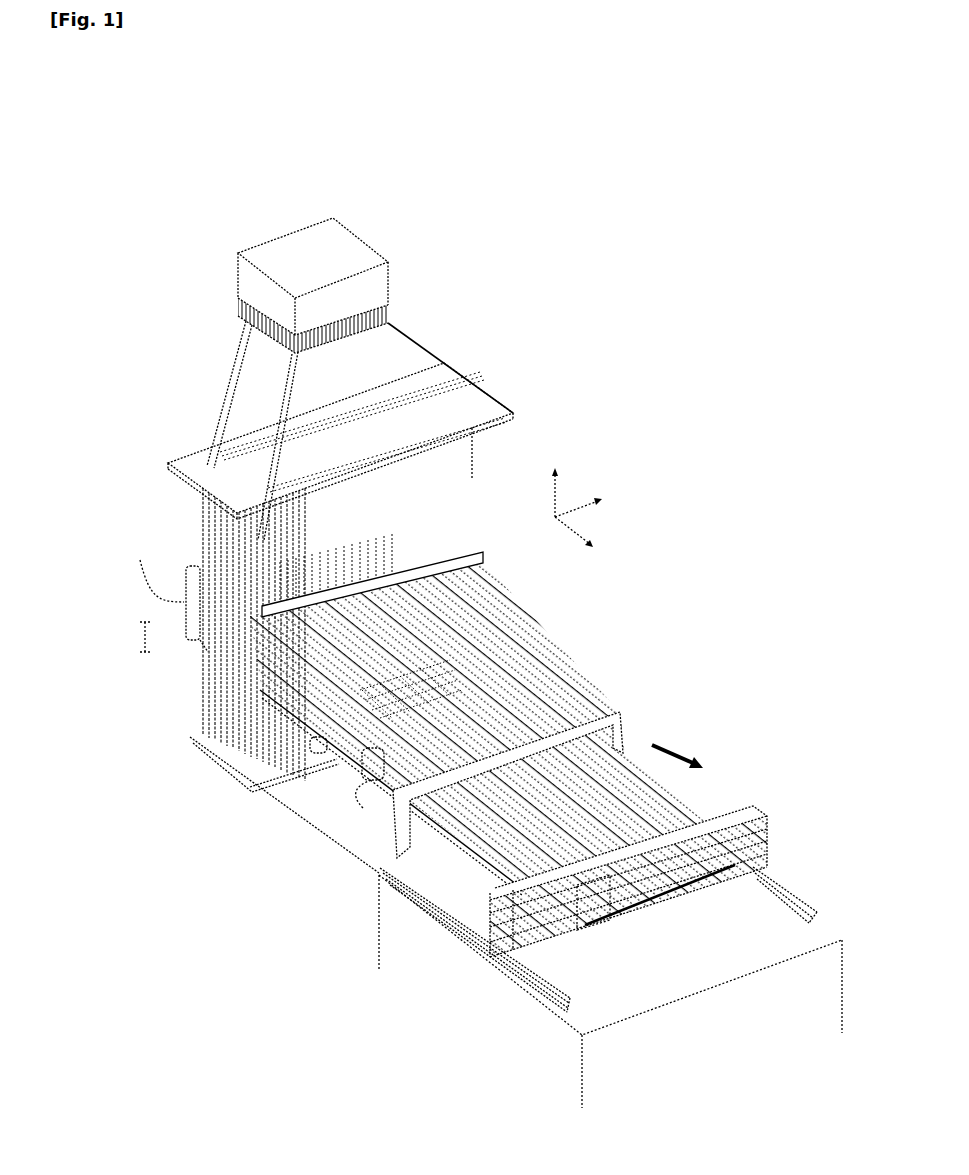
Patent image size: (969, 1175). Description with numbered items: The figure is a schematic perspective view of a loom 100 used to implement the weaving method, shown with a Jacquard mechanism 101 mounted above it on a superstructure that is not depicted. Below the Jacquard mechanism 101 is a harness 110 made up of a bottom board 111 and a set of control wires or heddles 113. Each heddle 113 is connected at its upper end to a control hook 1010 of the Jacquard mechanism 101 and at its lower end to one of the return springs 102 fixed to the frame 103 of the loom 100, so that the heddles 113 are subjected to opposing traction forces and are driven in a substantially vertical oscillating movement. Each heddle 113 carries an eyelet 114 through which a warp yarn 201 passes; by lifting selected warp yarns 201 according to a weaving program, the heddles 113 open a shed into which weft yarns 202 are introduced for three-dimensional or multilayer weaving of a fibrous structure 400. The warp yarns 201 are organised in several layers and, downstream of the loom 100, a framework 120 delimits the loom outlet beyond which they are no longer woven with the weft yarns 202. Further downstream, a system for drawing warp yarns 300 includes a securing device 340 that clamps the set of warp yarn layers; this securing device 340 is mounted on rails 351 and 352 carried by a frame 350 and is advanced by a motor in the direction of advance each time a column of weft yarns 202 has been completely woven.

The loom 100 is at (660, 362).
The Jacquard mechanism 101 is at (350, 248).
The control hook 1010 is at (362, 340).
The harness 110 is at (363, 418).
The bottom board 111 is at (442, 365).
The heddle 113 is at (407, 337).
The eyelet 114 is at (203, 653).
The return spring 102 is at (228, 764).
The frame 103 is at (308, 768).
The framework 120 is at (590, 712).
The warp yarn 201 is at (282, 645).
The weft yarn 202 is at (394, 672).
The system for drawing warp yarns 300 is at (778, 784).
The securing device 340 is at (781, 840).
The frame 350 is at (610, 1035).
The rail 351 is at (517, 984).
The rail 352 is at (800, 893).
The fibrous structure 400 is at (570, 625).